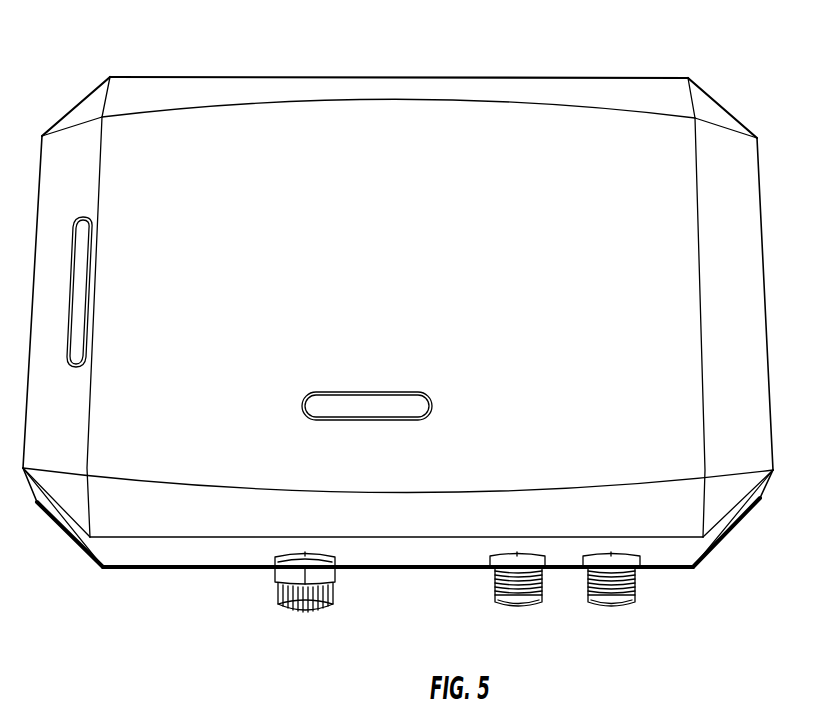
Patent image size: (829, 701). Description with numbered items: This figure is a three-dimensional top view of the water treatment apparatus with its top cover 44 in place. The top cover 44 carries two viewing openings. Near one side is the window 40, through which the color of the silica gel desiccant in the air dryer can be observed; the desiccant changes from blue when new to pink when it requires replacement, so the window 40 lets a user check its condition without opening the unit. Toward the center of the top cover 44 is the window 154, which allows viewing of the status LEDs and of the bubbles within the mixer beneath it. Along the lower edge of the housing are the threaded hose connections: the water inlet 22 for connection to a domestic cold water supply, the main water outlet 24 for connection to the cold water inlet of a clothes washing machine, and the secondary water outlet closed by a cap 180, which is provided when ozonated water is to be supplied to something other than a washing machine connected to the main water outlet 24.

The top cover 44 is at (455, 153).
The window 40 is at (82, 313).
The window 154 is at (373, 400).
The cap 180 is at (308, 602).
The water outlet 24 is at (515, 582).
The water inlet 22 is at (612, 582).